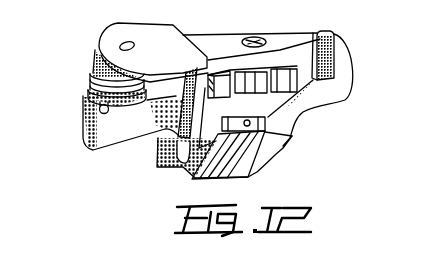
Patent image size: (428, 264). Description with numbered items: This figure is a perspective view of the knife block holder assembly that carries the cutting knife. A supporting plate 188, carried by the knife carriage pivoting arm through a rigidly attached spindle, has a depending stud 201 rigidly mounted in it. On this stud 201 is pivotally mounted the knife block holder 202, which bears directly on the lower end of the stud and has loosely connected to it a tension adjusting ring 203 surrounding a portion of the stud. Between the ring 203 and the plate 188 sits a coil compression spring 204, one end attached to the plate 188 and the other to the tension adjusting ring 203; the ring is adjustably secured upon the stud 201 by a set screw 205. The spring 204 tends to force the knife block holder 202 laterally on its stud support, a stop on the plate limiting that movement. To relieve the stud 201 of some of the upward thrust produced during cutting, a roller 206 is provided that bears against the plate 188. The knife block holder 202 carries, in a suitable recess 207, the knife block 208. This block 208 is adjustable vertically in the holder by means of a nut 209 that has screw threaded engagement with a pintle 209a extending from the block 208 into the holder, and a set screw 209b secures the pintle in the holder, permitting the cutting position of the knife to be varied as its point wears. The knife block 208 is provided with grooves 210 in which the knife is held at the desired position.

The supporting plate 188 is at (142, 41).
The depending stud 201 is at (92, 76).
The knife block holder 202 is at (92, 148).
The tension adjusting ring 203 is at (88, 97).
The coil compression spring 204 is at (95, 62).
The set screw 205 is at (108, 112).
The roller 206 is at (327, 35).
The recess 207 is at (300, 134).
The knife block 208 is at (257, 171).
The nut 209 is at (242, 84).
The pintle 209a is at (250, 124).
The set screw 209b is at (254, 37).
The grooves 210 is at (233, 179).